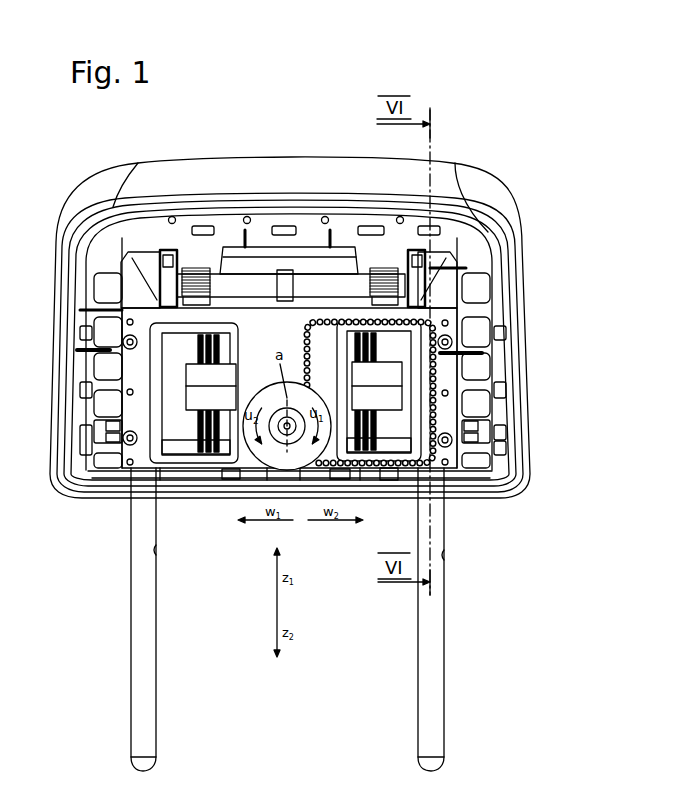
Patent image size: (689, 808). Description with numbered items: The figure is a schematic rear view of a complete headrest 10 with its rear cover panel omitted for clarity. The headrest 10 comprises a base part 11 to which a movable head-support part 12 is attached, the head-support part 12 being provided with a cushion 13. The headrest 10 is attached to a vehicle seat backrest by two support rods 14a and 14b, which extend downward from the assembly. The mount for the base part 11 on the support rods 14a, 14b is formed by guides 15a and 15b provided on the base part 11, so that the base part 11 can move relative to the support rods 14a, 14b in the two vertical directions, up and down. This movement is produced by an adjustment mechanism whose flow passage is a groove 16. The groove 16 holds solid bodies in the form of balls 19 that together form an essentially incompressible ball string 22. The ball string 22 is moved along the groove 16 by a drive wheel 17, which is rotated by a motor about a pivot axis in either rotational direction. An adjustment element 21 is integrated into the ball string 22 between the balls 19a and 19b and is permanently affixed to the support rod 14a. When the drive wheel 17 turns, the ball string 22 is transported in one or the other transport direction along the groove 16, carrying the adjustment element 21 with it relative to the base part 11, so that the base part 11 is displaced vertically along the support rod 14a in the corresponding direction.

The headrest 10 is at (300, 262).
The base part 11 is at (500, 252).
The movable head-support part 12 is at (480, 298).
The cushion 13 is at (290, 175).
The support rod 14a is at (430, 672).
The support rod 14b is at (152, 683).
The guide 15a is at (458, 377).
The guide 15b is at (120, 367).
The groove 16 is at (300, 336).
The drive wheel 17 is at (272, 455).
The balls 19 is at (500, 432).
The ball 19a is at (494, 336).
The ball 19b is at (497, 391).
The adjustment element 21 is at (440, 353).
The ball string 22 is at (492, 444).